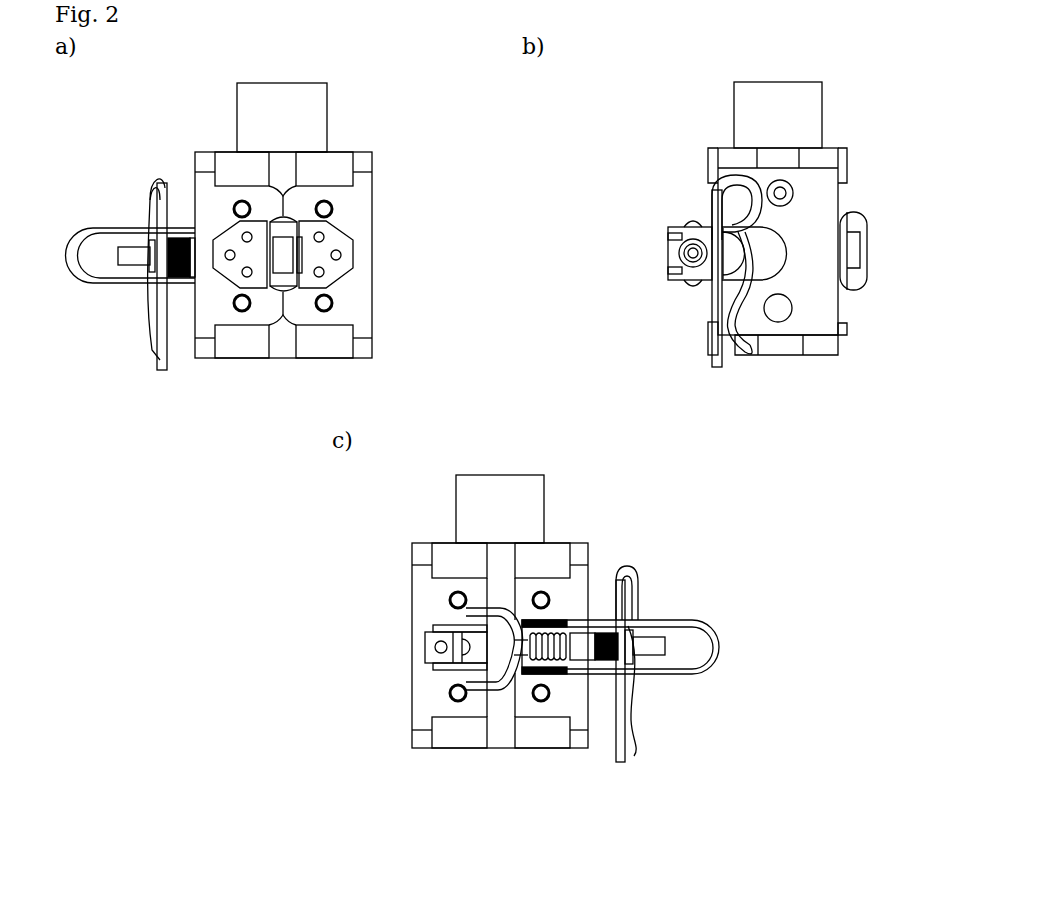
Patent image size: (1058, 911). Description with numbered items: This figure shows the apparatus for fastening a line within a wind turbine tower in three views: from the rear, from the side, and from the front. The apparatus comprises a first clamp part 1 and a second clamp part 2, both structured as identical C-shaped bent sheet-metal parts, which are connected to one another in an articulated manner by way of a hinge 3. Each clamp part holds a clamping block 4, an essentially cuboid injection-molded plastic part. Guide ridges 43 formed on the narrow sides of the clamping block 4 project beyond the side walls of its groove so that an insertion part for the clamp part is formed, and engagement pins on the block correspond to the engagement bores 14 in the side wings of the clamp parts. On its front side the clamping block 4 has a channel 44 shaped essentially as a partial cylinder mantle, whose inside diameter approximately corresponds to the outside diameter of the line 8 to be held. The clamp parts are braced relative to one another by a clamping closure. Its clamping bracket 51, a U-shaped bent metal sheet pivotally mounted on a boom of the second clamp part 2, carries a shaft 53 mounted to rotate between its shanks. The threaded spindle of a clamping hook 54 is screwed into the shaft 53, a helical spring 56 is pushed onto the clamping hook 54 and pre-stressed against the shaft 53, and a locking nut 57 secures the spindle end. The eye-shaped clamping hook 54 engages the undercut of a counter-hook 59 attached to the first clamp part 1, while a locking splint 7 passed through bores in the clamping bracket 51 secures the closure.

In FIG. 2a, the first clamp part 1 is at (364, 218).
In FIG. 2c, the first clamp part 1 is at (420, 576).
In FIG. 2b, the second clamp part 2 is at (823, 316).
In FIG. 2c, the second clamp part 2 is at (580, 578).
In FIG. 2b, the hinge 3 is at (868, 222).
In FIG. 2b, the clamping block 4 is at (815, 372).
In FIG. 2b, the locking splint 7 is at (708, 305).
In FIG. 2a, the line 8 is at (296, 103).
In FIG. 2c, the line 8 is at (512, 495).
In FIG. 2a, the engagement bores 14 is at (331, 292).
In FIG. 2a, the guide ridges 43 is at (345, 180).
In FIG. 2a, the channel 44 is at (326, 303).
In FIG. 2a, the clamping bracket 51 is at (98, 286).
In FIG. 2c, the shaft 53 is at (580, 665).
In FIG. 2c, the clamping hook 54 is at (457, 676).
In FIG. 2a, the helical spring 56 is at (172, 232).
In FIG. 2c, the helical spring 56 is at (528, 660).
In FIG. 2b, the locking nut 57 is at (668, 258).
In FIG. 2c, the locking nut 57 is at (633, 658).
In FIG. 2c, the counter-hook 59 is at (430, 656).